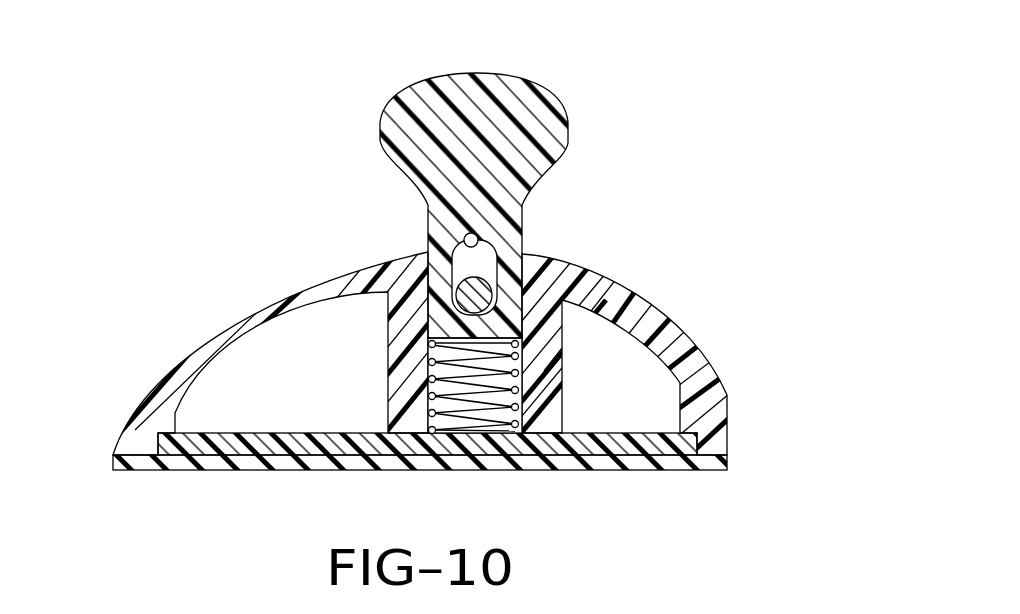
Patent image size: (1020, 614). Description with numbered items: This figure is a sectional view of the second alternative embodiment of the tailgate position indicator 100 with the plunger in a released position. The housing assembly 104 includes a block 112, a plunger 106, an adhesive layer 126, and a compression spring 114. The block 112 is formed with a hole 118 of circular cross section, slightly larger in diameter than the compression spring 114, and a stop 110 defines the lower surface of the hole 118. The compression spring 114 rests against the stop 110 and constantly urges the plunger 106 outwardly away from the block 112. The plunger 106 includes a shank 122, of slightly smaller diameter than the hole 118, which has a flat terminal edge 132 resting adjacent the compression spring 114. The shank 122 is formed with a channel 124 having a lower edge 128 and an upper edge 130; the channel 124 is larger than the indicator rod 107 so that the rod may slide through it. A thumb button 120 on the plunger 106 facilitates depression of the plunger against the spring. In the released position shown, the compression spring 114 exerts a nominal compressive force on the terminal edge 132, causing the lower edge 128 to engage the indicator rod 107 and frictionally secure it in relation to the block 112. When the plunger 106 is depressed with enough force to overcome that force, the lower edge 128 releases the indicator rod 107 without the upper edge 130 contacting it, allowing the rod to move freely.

The tailgate position indicator 100 is at (323, 165).
The housing assembly 104 is at (462, 346).
The plunger 106 is at (478, 183).
The indicator rod 107 is at (452, 268).
The stop 110 is at (447, 440).
The block 112 is at (700, 353).
The compression spring 114 is at (421, 439).
The hole 118 is at (502, 418).
The thumb button 120 is at (514, 192).
The shank 122 is at (524, 252).
The channel 124 is at (500, 238).
The adhesive layer 126 is at (663, 472).
The lower edge 128 is at (399, 287).
The upper edge 130 is at (485, 266).
The terminal edge 132 is at (500, 345).